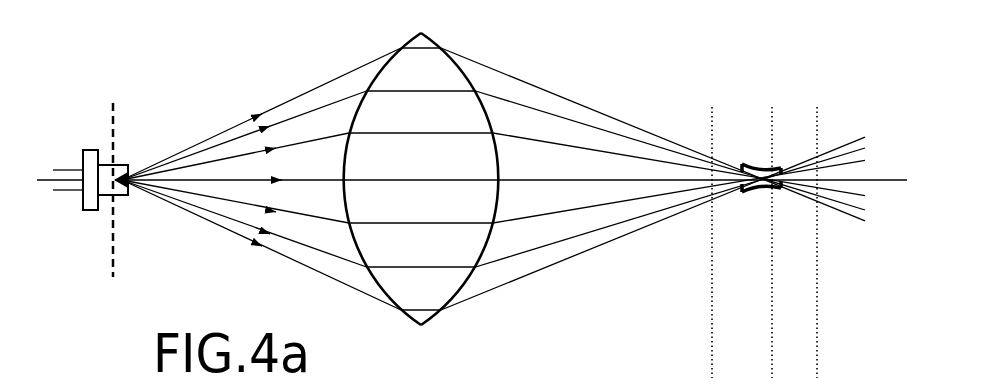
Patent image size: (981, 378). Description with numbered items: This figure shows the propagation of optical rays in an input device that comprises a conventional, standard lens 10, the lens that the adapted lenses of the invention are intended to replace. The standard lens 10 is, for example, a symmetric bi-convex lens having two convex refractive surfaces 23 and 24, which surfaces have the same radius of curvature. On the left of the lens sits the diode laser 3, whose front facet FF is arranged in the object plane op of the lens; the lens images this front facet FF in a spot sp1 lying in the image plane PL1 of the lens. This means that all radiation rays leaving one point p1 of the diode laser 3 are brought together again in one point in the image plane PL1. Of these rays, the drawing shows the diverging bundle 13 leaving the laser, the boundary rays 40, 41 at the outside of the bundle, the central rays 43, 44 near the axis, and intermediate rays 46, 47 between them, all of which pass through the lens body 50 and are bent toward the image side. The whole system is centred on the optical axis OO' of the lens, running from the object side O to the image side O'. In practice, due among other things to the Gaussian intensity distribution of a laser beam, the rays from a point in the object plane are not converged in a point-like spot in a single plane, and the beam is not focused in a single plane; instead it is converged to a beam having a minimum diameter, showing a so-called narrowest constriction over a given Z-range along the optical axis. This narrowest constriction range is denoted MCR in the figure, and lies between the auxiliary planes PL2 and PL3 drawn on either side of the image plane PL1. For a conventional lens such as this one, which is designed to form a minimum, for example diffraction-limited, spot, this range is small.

The diode laser 3 is at (93, 150).
The standard lens 10 is at (419, 189).
The diverging radiation beam 13 is at (190, 180).
The convex refractive surface 23 is at (378, 66).
The convex refractive surface 24 is at (462, 68).
The boundary ray 40 is at (537, 88).
The boundary ray 41 is at (539, 271).
The central ray 43 is at (610, 152).
The central ray 44 is at (567, 213).
The upper intermediate ray 46 is at (570, 120).
The lower intermediate ray 47 is at (613, 228).
The lens body rays 50 is at (421, 213).
The optical axis O is at (54, 192).
The optical axis O' is at (908, 202).
The front facet FF is at (128, 172).
The point of the diode laser p1 is at (116, 186).
The object plane op is at (132, 192).
The image plane PL1 is at (773, 229).
The marginal focal plane PL2 is at (708, 229).
The third plane PL3 is at (823, 229).
The narrowest constriction range MCR is at (760, 194).
The spot sp1 is at (771, 194).